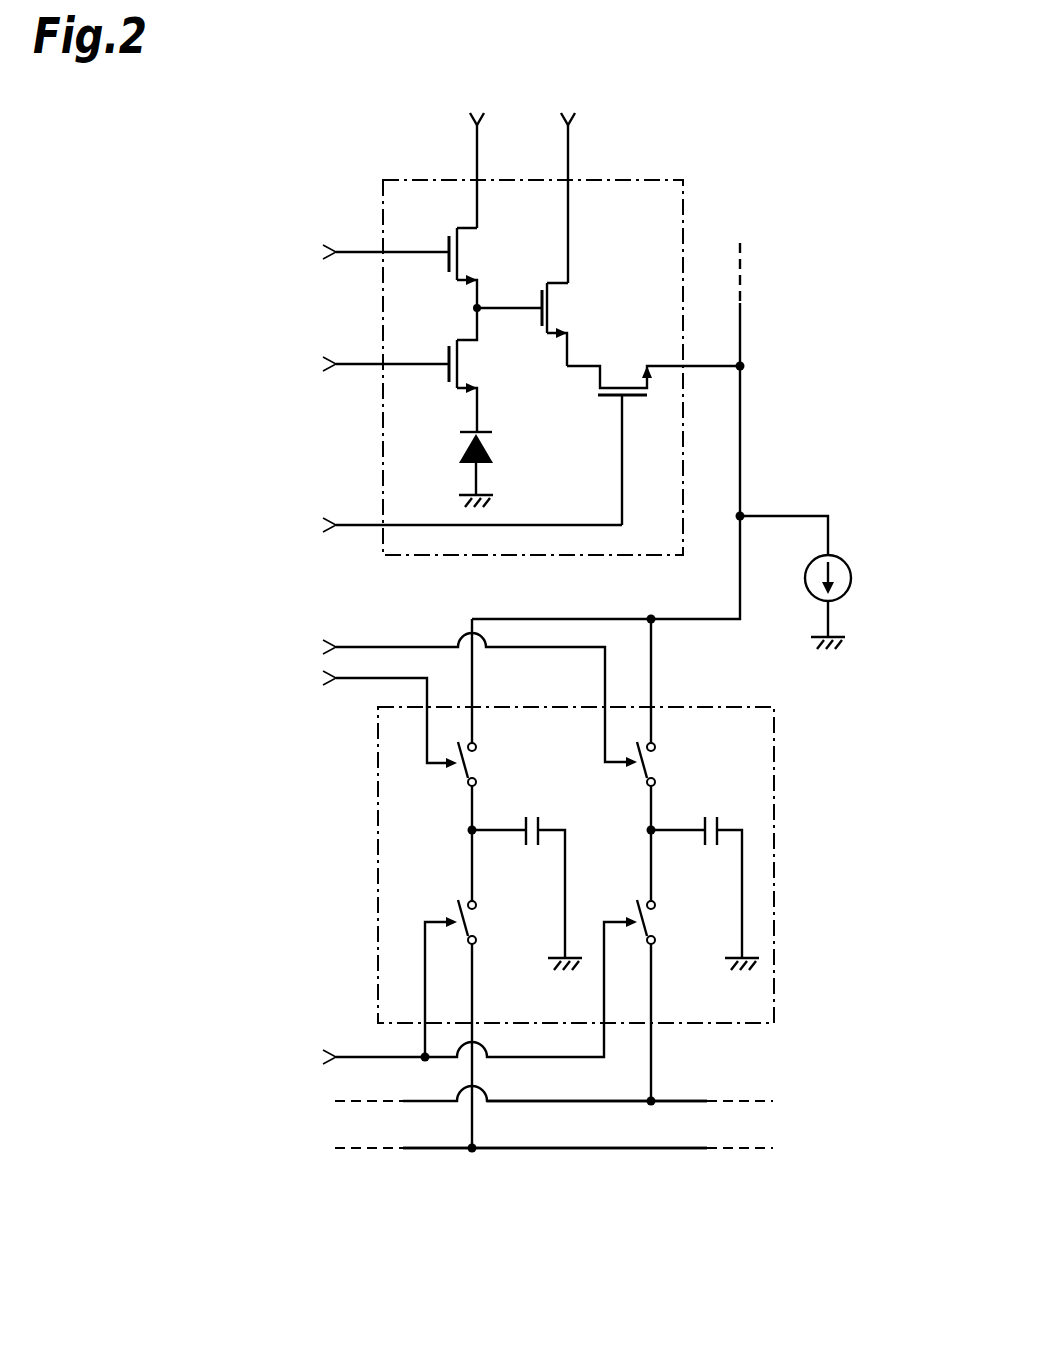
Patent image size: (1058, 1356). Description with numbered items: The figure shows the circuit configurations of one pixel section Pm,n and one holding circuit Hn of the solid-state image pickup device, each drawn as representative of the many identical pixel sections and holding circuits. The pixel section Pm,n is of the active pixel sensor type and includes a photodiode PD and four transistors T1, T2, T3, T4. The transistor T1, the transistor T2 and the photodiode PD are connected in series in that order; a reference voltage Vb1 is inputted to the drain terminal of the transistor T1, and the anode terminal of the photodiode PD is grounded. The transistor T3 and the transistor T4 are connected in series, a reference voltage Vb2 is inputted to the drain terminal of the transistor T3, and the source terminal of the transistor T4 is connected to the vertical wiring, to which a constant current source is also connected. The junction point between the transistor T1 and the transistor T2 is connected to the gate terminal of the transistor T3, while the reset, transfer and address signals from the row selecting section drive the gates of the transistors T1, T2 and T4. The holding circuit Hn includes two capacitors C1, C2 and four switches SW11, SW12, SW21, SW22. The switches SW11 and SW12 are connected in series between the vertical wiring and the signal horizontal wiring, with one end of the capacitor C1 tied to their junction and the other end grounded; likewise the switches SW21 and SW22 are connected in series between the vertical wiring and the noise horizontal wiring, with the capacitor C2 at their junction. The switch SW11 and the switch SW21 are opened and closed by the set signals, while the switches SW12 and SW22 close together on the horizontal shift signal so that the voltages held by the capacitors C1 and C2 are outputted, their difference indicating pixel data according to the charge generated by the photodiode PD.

The pixel section Pm,n is at (650, 180).
The reference voltage Vb1 is at (476, 152).
The reference voltage Vb2 is at (570, 179).
The transistor T1 is at (462, 258).
The transistor T2 is at (462, 368).
The transistor T3 is at (552, 312).
The transistor T4 is at (622, 387).
The photodiode PD is at (494, 452).
The holding circuit Hn is at (775, 782).
The switch SW21 is at (464, 765).
The switch SW22 is at (464, 924).
The switch SW11 is at (643, 765).
The switch SW12 is at (643, 924).
The capacitor C2 is at (540, 826).
The capacitor C1 is at (719, 826).